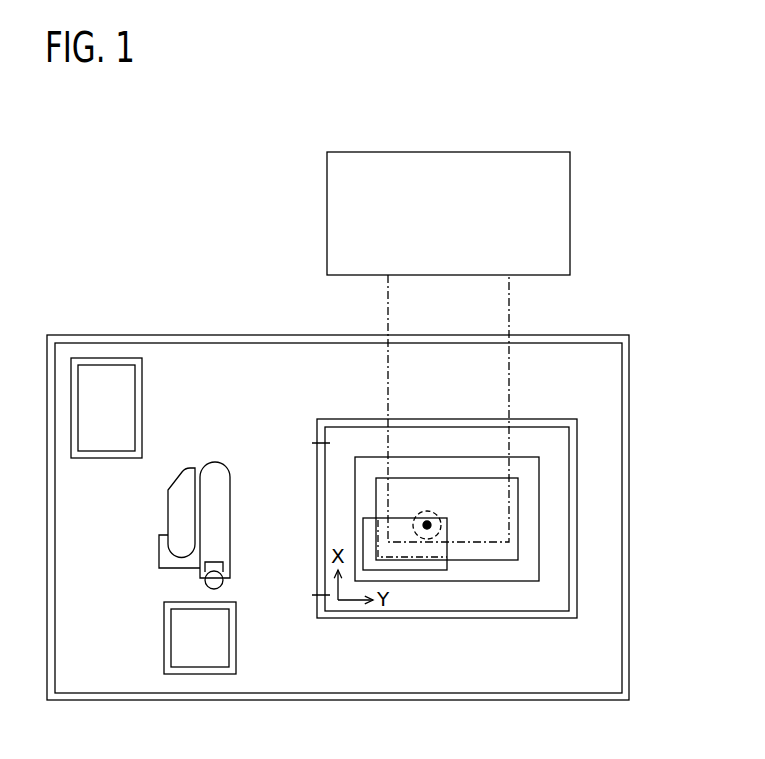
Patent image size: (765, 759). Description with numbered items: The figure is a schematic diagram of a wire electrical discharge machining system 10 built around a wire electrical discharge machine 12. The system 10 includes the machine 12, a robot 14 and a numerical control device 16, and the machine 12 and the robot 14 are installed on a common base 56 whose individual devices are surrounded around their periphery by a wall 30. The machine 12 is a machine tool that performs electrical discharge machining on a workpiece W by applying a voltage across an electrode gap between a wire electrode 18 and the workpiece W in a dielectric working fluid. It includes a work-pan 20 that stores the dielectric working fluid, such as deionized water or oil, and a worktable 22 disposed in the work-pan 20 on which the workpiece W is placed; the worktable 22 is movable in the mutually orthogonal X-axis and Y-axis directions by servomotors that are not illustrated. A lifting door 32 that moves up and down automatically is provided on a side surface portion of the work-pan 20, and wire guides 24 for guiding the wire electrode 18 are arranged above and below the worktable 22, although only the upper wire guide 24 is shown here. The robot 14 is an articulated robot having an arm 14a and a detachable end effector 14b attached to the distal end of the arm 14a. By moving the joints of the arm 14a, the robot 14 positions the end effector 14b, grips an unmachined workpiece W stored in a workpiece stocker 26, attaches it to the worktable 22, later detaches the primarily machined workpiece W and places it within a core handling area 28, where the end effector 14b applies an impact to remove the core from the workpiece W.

The wire electrical discharge machining system 10 is at (614, 146).
The wire electrical discharge machine 12 is at (577, 362).
The robot 14 is at (184, 527).
The arm 14a is at (220, 505).
The end effector 14b is at (223, 581).
The numerical control device 16 is at (441, 175).
The wire electrode 18 is at (432, 524).
The work-pan 20 is at (578, 506).
The worktable 22 is at (496, 572).
The wire guide 24 is at (427, 511).
The workpiece stocker 26 is at (103, 358).
The core handling area 28 is at (180, 636).
The wall 30 is at (630, 548).
The lifting door 32 is at (316, 465).
The base 56 is at (602, 433).
The workpiece W is at (425, 562).